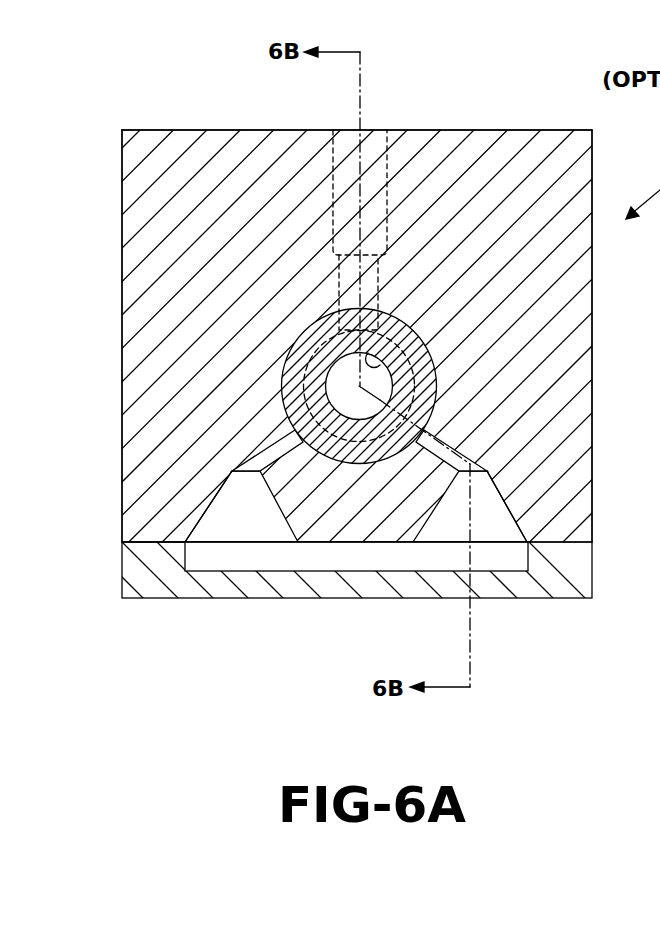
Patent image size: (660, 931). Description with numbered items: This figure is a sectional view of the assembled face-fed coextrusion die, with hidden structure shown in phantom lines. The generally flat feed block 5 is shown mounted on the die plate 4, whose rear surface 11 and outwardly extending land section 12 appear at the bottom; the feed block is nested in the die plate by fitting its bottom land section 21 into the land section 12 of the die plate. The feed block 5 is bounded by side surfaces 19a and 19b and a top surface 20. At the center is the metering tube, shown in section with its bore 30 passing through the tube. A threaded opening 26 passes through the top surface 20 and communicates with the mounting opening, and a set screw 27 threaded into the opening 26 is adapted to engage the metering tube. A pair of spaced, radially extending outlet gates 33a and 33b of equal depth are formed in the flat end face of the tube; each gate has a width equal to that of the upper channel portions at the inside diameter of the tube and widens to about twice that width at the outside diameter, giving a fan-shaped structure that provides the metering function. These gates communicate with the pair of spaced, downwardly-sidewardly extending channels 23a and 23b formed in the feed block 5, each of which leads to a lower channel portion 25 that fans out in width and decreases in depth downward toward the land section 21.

The die plate 4 is at (358, 605).
The feed block 5 is at (502, 126).
The rear surface 11 is at (306, 571).
The land section 12 is at (160, 572).
The side surface 19a is at (122, 332).
The side surface 19b is at (594, 328).
The top surface 20 is at (330, 287).
The land section 21 is at (385, 528).
The channel 23a is at (257, 455).
The channel 23b is at (462, 455).
The lower channel portion 25 is at (195, 522).
The opening 26 is at (336, 165).
The set screw 27 is at (348, 283).
The bore 30 is at (401, 352).
The outlet gate 33a is at (290, 412).
The outlet gate 33b is at (430, 412).